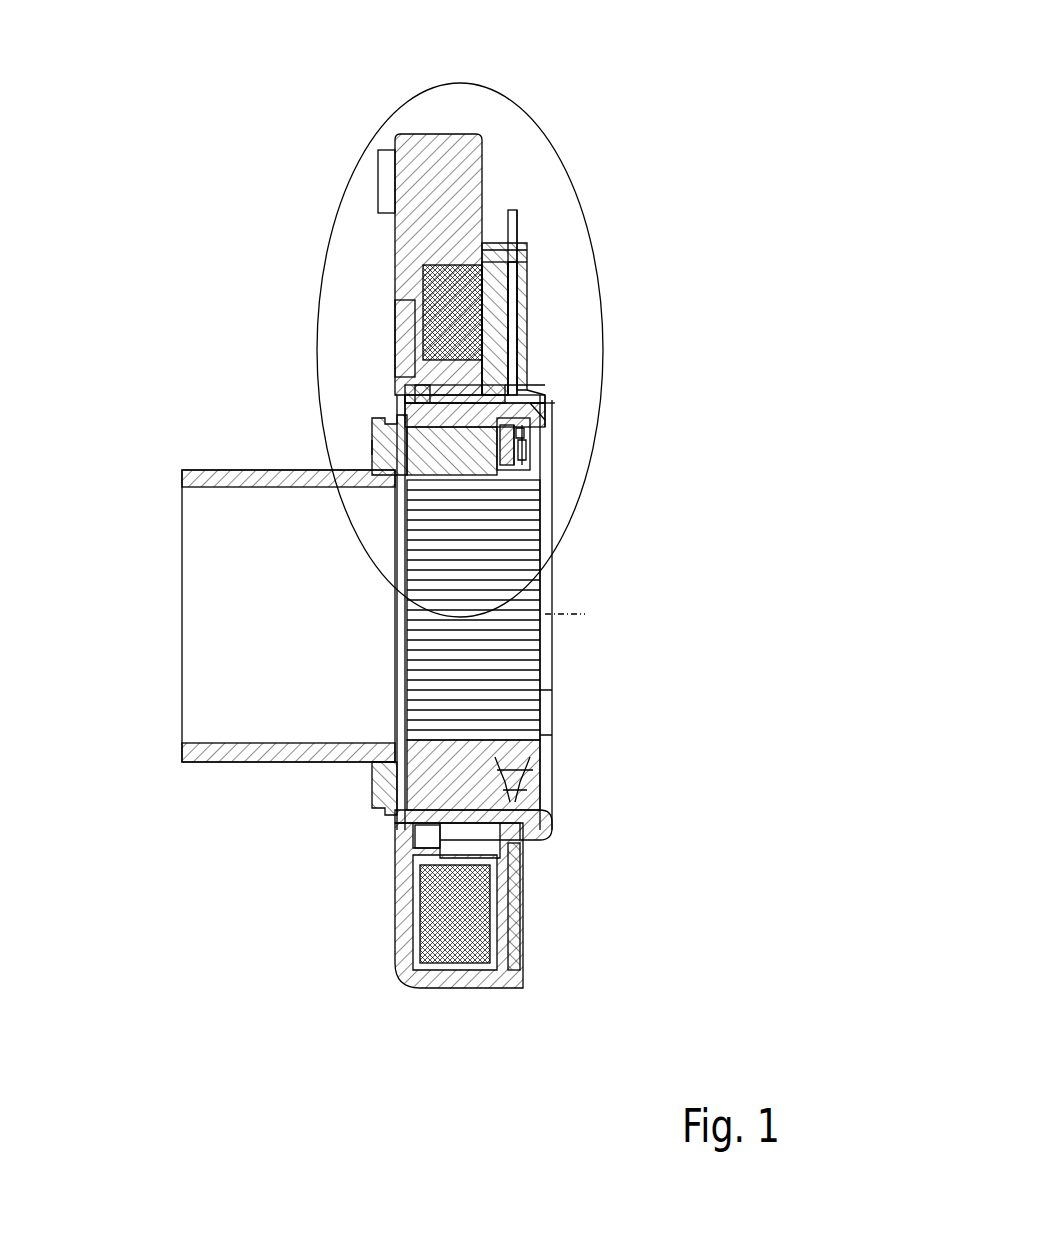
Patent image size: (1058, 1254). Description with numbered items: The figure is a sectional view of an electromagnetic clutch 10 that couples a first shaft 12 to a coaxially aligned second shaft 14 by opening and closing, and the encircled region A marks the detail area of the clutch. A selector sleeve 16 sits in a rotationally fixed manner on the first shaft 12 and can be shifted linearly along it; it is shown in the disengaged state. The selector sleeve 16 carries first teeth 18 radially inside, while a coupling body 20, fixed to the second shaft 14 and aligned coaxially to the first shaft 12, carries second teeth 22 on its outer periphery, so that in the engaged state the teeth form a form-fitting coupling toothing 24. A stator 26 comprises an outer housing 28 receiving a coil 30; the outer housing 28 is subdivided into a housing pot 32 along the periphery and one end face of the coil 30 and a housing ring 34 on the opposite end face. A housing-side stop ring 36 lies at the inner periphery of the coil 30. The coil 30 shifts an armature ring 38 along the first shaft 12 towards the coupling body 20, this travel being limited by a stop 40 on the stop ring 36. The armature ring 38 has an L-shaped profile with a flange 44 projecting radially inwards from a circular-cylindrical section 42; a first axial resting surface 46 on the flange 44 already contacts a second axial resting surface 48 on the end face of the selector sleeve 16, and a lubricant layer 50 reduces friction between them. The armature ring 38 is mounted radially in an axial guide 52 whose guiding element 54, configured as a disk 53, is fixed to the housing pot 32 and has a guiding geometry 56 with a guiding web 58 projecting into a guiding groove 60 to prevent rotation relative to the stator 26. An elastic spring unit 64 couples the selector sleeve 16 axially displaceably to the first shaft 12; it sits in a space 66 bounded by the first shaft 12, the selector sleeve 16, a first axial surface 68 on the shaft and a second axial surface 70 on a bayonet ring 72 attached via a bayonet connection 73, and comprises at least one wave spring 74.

The electromagnetic clutch 10 is at (178, 126).
The first shaft 12 is at (468, 472).
The second shaft 14 is at (205, 470).
The selector sleeve 16 is at (548, 409).
The first teeth 18 is at (385, 413).
The coupling body 20 is at (370, 470).
The second teeth 22 is at (372, 425).
The coupling toothing 24 is at (405, 400).
The stator 26 is at (486, 126).
The outer housing 28 is at (534, 182).
The coil 30 is at (462, 277).
The housing pot 32 is at (520, 228).
The housing ring 34 is at (525, 285).
The stop ring 36 is at (383, 376).
The armature ring 38 is at (540, 395).
The stop 40 is at (425, 383).
The circular-cylindrical section 42 is at (445, 445).
The flange 44 is at (560, 443).
The first axial resting surface 46 is at (535, 432).
The second axial resting surface 48 is at (548, 398).
The lubricant layer 50 is at (701, 439).
The axial guide 52 is at (556, 142).
The disk 53 is at (520, 306).
The guiding element 54 is at (518, 240).
The guiding geometry 56 is at (548, 393).
The guiding web 58 is at (539, 372).
The guiding groove 60 is at (562, 375).
The elastic spring unit 64 is at (503, 483).
The space 66 is at (470, 478).
The first axial surface 68 is at (538, 500).
The second axial surface 70 is at (555, 470).
The bayonet ring 72 is at (535, 445).
The bayonet connection 73 is at (535, 440).
The wave spring 74 is at (547, 480).
The detail region A is at (580, 170).